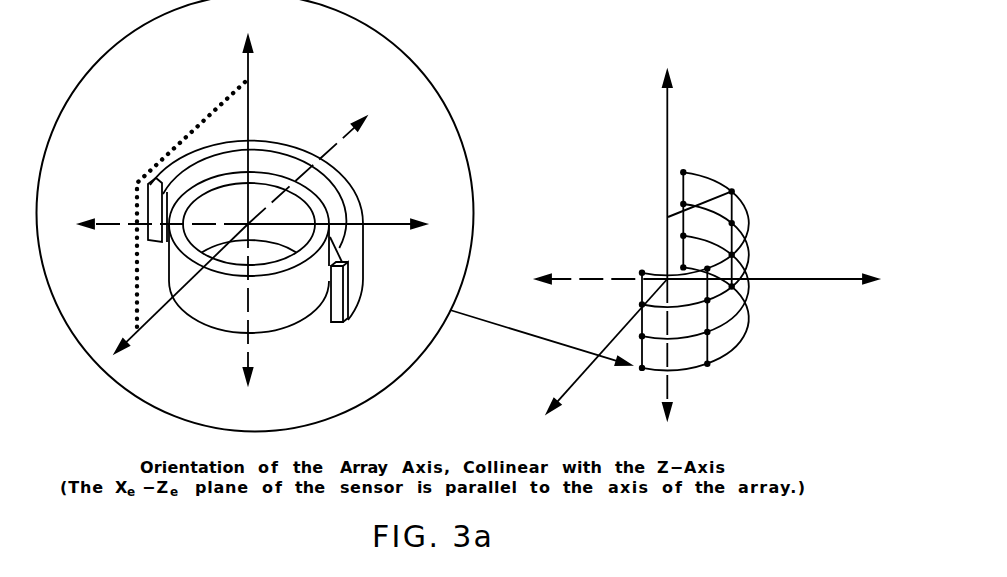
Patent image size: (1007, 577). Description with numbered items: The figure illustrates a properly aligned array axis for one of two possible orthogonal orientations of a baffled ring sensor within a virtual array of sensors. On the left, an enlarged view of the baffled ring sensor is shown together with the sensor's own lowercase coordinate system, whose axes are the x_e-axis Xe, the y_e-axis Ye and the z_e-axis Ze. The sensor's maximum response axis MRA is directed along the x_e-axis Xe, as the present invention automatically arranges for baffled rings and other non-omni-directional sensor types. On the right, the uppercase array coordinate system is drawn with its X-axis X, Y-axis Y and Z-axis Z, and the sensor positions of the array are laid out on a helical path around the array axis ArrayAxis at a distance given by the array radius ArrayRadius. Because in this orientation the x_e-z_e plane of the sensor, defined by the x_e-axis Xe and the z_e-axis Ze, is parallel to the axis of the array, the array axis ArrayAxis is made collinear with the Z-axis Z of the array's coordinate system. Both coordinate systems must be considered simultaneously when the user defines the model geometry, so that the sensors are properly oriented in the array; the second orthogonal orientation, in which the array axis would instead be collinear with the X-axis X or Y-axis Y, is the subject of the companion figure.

The maximum response axis MRA is at (162, 206).
The z_e-axis of the sensor coordinate system Ze is at (230, 210).
The y_e-axis of the sensor coordinate system Ye is at (269, 225).
The x_e-axis of the sensor coordinate system Xe is at (226, 235).
The Z-axis of the array coordinate system Z is at (656, 245).
The Y-axis of the array coordinate system Y is at (709, 297).
The X-axis of the array coordinate system X is at (595, 346).
The array axis ArrayAxis is at (654, 259).
The array radius ArrayRadius is at (714, 183).